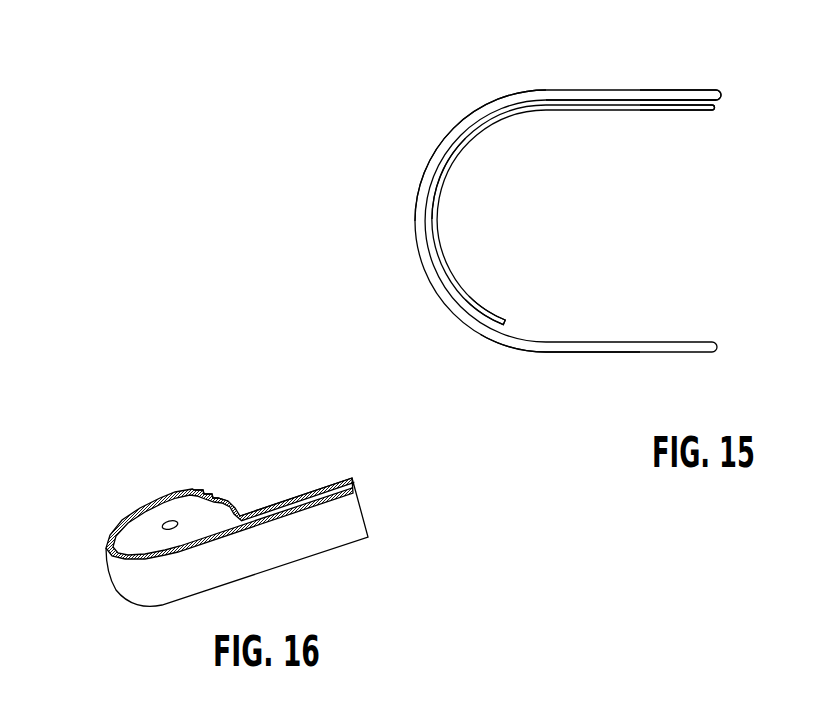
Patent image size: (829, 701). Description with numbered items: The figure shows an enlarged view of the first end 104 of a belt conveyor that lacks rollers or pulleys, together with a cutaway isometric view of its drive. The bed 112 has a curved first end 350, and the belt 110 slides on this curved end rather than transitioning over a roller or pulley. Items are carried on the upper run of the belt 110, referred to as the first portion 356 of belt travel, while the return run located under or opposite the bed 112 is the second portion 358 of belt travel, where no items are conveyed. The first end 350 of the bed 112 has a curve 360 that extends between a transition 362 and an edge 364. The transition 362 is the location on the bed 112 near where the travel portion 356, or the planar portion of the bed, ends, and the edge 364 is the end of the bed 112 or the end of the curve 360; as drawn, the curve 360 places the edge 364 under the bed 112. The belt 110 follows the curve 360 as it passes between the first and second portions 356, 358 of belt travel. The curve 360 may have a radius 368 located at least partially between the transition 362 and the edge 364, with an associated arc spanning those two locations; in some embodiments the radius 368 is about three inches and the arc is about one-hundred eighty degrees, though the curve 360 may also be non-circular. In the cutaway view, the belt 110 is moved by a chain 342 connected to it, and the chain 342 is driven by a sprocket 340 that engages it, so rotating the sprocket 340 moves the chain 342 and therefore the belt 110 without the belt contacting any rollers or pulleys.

In FIG. 15, the first end 104 is at (564, 220).
In FIG. 16, the first end 104 is at (213, 534).
In FIG. 15, the belt 110 is at (704, 92).
In FIG. 16, the belt 110 is at (337, 530).
In FIG. 15, the bed 112 is at (715, 110).
In FIG. 16, the sprocket 340 is at (213, 497).
In FIG. 16, the chain 342 is at (307, 490).
In FIG. 15, the curved first end 350 is at (418, 206).
In FIG. 15, the first portion of belt travel 356 is at (537, 88).
In FIG. 15, the second portion of belt travel 358 is at (543, 360).
In FIG. 15, the curve 360 is at (443, 242).
In FIG. 15, the transition 362 is at (613, 101).
In FIG. 15, the edge 364 is at (506, 319).
In FIG. 15, the radius 368 is at (475, 152).